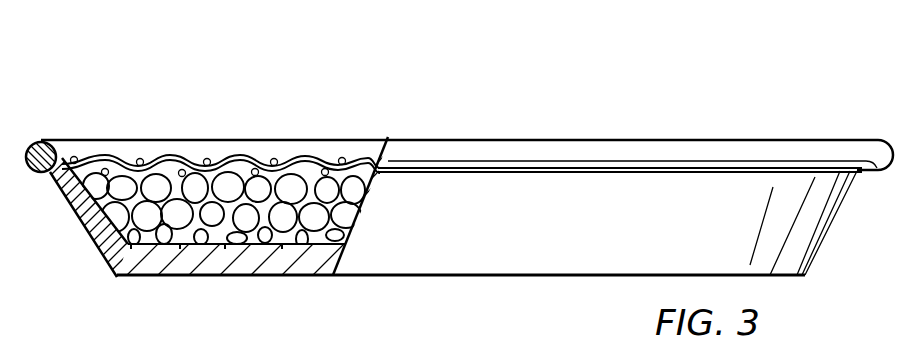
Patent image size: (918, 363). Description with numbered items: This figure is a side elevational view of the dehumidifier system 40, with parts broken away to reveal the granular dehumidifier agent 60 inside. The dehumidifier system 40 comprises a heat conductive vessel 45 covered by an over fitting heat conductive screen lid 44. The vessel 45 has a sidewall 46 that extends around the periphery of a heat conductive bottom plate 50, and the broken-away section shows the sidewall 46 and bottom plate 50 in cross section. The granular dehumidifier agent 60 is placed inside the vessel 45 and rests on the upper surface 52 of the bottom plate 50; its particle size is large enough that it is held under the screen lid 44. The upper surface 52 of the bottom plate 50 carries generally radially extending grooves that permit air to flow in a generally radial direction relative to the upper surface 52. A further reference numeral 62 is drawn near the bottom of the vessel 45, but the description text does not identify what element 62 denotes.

The dehumidifier system 40 is at (40, 135).
The screen lid 44 is at (345, 158).
The vessel 45 is at (722, 139).
The sidewall 46 is at (90, 220).
The bottom plate 50 is at (222, 262).
The upper surface 52 is at (152, 244).
The granular dehumidifier agent 60 is at (263, 174).
The bottom surface 62 is at (225, 278).